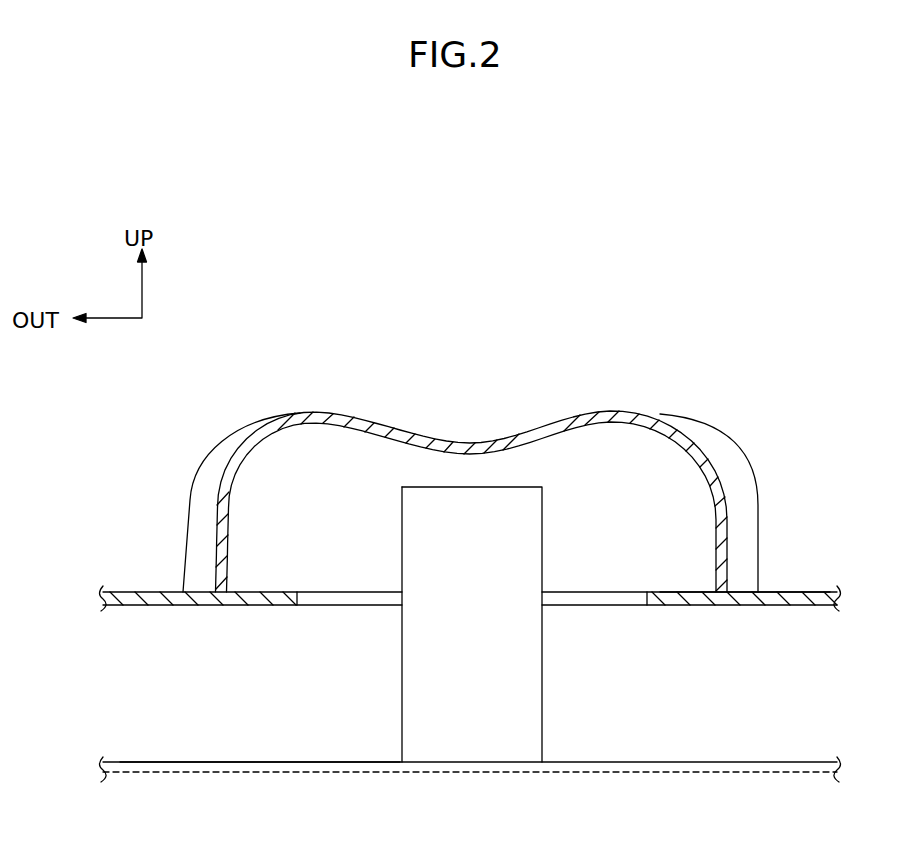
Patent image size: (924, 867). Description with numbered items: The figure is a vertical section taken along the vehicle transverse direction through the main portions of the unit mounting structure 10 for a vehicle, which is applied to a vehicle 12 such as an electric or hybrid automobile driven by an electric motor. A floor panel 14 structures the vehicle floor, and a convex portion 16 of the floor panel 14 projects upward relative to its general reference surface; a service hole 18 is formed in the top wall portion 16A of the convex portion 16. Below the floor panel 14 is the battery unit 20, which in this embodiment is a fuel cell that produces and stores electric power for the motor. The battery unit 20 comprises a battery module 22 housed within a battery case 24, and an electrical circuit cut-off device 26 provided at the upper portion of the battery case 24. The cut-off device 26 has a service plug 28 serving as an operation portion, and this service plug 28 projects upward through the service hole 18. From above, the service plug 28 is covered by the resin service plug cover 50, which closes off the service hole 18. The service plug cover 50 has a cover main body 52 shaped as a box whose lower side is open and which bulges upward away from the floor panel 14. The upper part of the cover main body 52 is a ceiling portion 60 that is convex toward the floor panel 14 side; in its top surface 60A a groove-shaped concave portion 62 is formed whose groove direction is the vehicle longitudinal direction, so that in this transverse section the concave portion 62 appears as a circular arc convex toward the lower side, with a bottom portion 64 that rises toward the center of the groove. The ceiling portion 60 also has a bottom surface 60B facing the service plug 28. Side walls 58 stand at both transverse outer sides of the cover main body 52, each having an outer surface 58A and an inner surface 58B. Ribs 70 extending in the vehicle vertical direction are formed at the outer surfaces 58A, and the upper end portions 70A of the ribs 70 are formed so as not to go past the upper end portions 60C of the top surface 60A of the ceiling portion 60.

The unit mounting structure for a vehicle 10 is at (629, 264).
The vehicle 12 is at (723, 207).
The floor panel 14 is at (840, 595).
The convex portion 16 is at (833, 591).
The top wall portion 16A is at (797, 589).
The service hole 18 is at (645, 606).
The battery unit 20 is at (822, 784).
The battery module 22 is at (188, 776).
The battery case 24 is at (150, 760).
The electrical circuit cut-off device 26 is at (387, 688).
The service plug 28 is at (532, 532).
The service plug cover 50 is at (659, 360).
The cover main body 52 is at (664, 410).
The side walls 58 is at (232, 477).
The outer surfaces 58A is at (218, 508).
The inner surfaces 58B is at (228, 527).
The ceiling portion 60 is at (599, 423).
The top surface 60A is at (577, 419).
The bottom surface 60B is at (376, 437).
The upper end portions 60C is at (313, 410).
The concave portion 62 is at (503, 438).
The bottom portion 64 is at (472, 442).
The ribs 70 is at (190, 500).
The upper end portions 70A is at (248, 421).